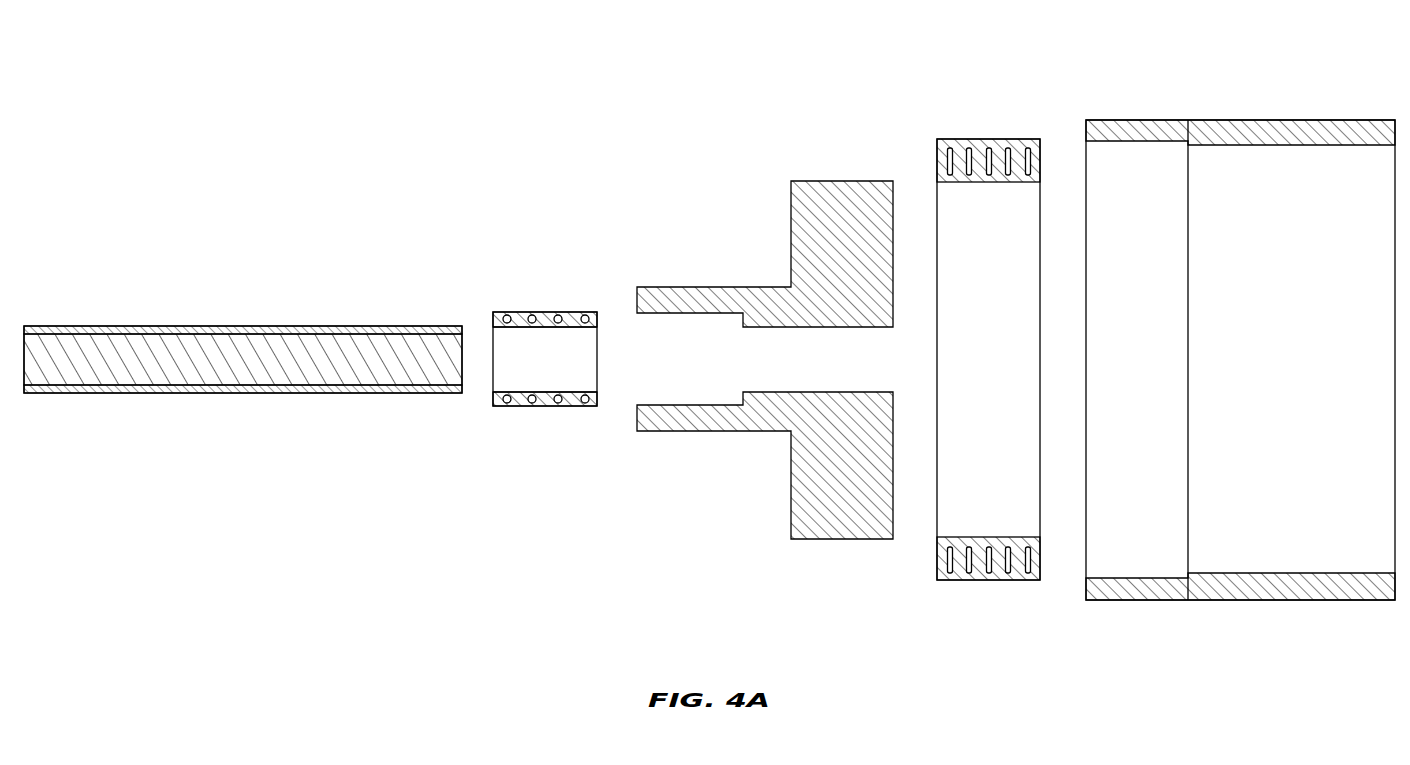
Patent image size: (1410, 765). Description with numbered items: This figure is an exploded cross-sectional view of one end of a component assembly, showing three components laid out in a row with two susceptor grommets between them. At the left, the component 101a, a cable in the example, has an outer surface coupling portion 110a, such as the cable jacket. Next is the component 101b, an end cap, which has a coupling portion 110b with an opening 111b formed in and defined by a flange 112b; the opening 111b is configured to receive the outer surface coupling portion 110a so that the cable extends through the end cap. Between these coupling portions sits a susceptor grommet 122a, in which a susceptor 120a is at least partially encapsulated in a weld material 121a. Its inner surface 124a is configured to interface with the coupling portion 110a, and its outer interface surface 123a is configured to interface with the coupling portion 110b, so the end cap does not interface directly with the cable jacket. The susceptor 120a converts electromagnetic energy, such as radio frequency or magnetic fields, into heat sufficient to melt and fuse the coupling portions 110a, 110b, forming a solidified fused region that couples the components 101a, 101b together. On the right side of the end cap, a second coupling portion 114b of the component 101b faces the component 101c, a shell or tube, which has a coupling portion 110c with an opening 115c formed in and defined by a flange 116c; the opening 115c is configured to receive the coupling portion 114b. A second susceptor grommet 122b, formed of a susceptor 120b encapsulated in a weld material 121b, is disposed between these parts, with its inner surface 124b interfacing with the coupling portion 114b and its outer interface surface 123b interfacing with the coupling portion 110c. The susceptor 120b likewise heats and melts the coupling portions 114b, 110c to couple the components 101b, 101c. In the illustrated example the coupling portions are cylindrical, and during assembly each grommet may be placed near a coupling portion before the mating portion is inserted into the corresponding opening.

The component 101a is at (243, 326).
The coupling portion 110a is at (256, 326).
The susceptor grommet 122a is at (505, 366).
The susceptor 120a is at (518, 366).
The inner surface 124a is at (524, 320).
The outer interface surface 123a is at (518, 407).
The weld material 121a is at (575, 407).
The component 101b is at (737, 326).
The coupling portion 110b is at (737, 326).
The opening 111b is at (635, 384).
The flange 112b is at (700, 298).
The coupling portion 114b is at (826, 181).
The susceptor grommet 122b is at (941, 355).
The susceptor 120b is at (959, 367).
The inner surface 124b is at (962, 182).
The outer interface surface 123b is at (952, 582).
The weld material 121b is at (1010, 582).
The component 101c is at (1214, 325).
The coupling portion 110c is at (1214, 346).
The flange 116c is at (1138, 120).
The opening 115c is at (1084, 570).